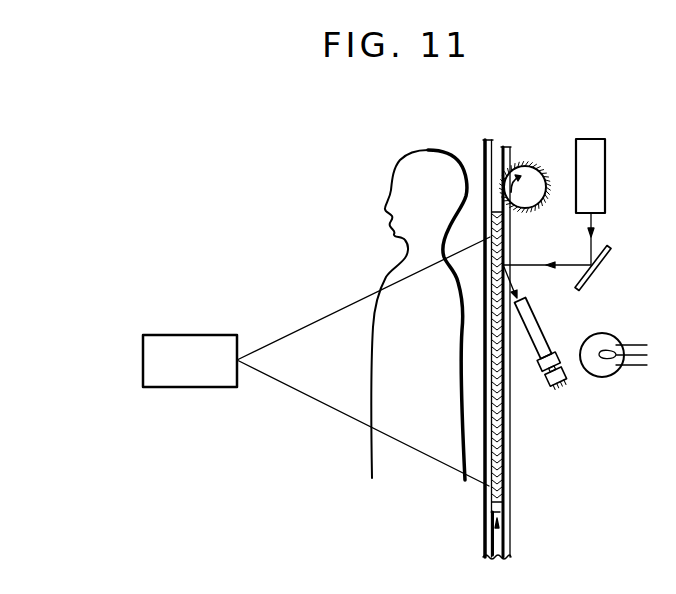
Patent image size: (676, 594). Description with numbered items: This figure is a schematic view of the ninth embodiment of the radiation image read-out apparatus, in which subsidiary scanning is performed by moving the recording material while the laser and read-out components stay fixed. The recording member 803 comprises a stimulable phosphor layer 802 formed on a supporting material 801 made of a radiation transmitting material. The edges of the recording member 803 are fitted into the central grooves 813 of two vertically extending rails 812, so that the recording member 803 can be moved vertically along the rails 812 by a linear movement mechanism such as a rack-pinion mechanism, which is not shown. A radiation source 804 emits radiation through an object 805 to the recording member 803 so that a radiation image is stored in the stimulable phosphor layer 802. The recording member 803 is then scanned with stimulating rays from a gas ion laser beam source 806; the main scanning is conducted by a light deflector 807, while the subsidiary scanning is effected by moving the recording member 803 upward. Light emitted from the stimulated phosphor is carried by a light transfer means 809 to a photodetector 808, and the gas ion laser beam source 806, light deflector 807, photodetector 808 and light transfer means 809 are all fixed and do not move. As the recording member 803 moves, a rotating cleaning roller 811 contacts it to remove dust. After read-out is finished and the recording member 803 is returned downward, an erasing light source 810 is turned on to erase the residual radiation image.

The supporting material 801 is at (488, 497).
The stimulable phosphor layer 802 is at (500, 494).
The recording member 803 is at (496, 525).
The radiation source 804 is at (220, 387).
The object 805 is at (378, 360).
The gas ion laser beam source 806 is at (605, 173).
The light deflector 807 is at (610, 257).
The photodetector 808 is at (538, 390).
The light transfer means 809 is at (544, 331).
The erasing light source 810 is at (612, 377).
The cleaning roller 811 is at (533, 172).
The rails 812 is at (482, 163).
The central grooves 813 is at (499, 143).